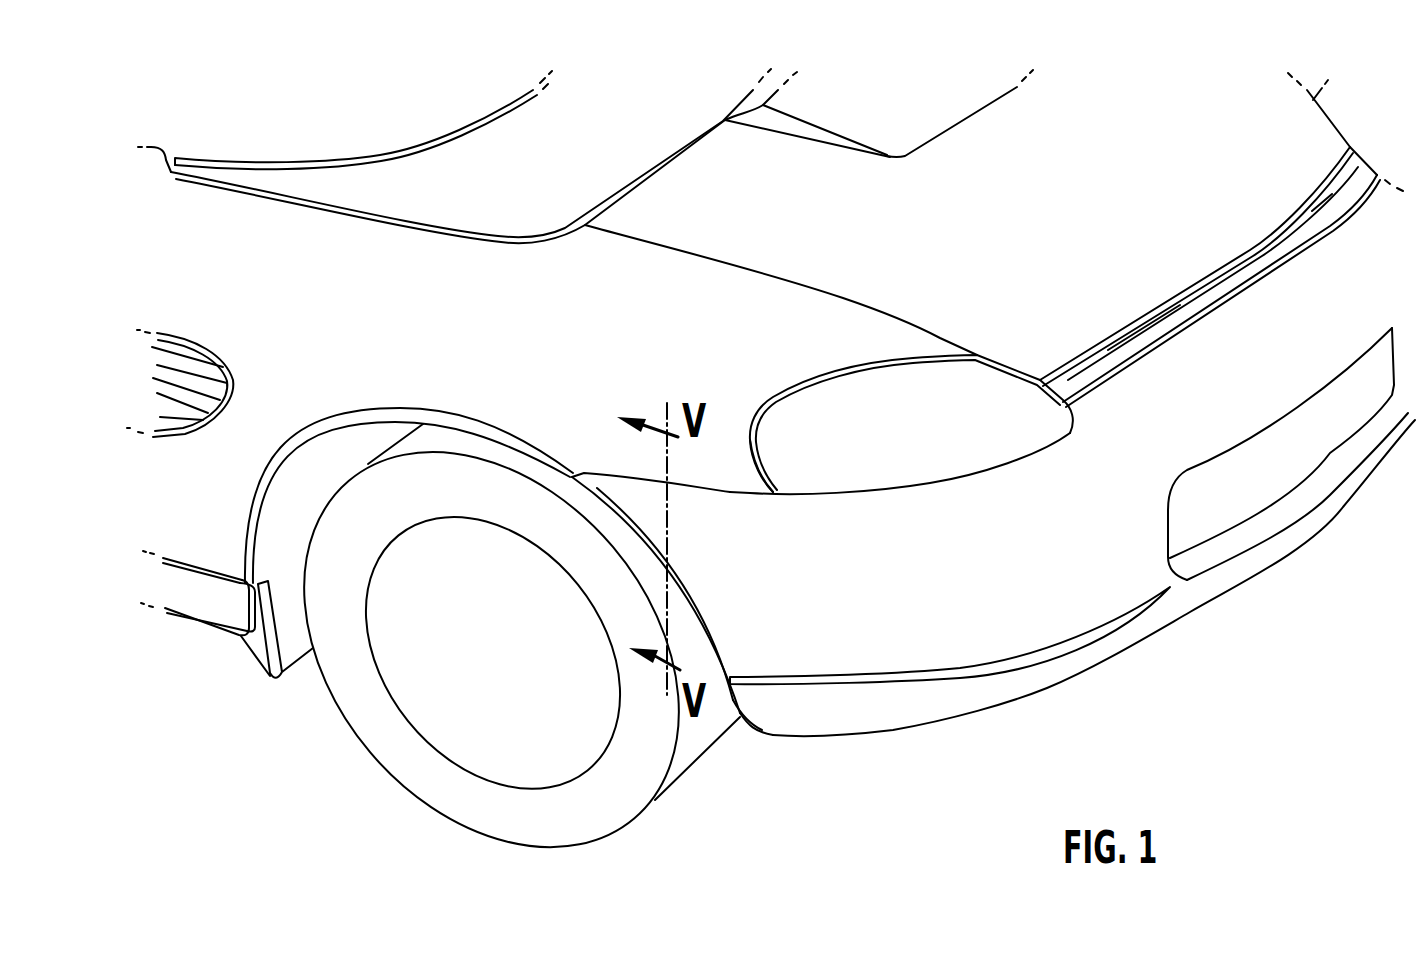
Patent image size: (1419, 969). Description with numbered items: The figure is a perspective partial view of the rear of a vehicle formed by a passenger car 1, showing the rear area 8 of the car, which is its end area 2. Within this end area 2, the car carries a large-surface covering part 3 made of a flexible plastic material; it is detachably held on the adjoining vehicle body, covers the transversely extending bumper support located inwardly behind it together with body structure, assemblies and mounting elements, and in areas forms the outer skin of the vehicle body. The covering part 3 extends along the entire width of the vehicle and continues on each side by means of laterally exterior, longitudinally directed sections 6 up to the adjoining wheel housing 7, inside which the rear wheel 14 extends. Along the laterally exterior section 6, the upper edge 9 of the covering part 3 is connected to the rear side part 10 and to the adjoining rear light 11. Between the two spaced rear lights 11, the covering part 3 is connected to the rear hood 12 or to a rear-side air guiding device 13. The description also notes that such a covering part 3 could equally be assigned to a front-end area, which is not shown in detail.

The passenger car 1 is at (557, 210).
The end area 2 is at (1064, 96).
The covering part 3 is at (970, 574).
The laterally exterior, longitudinally directed sections 6 is at (754, 702).
The wheel housing 7 is at (632, 595).
The rear area 8 is at (950, 704).
The upper edge 9 is at (707, 529).
The rear side part 10 is at (753, 499).
The rear light 11 is at (901, 447).
The rear hood 12 is at (1210, 277).
The rear-side air guiding device 13 is at (1213, 273).
The rear wheel 14 is at (491, 649).